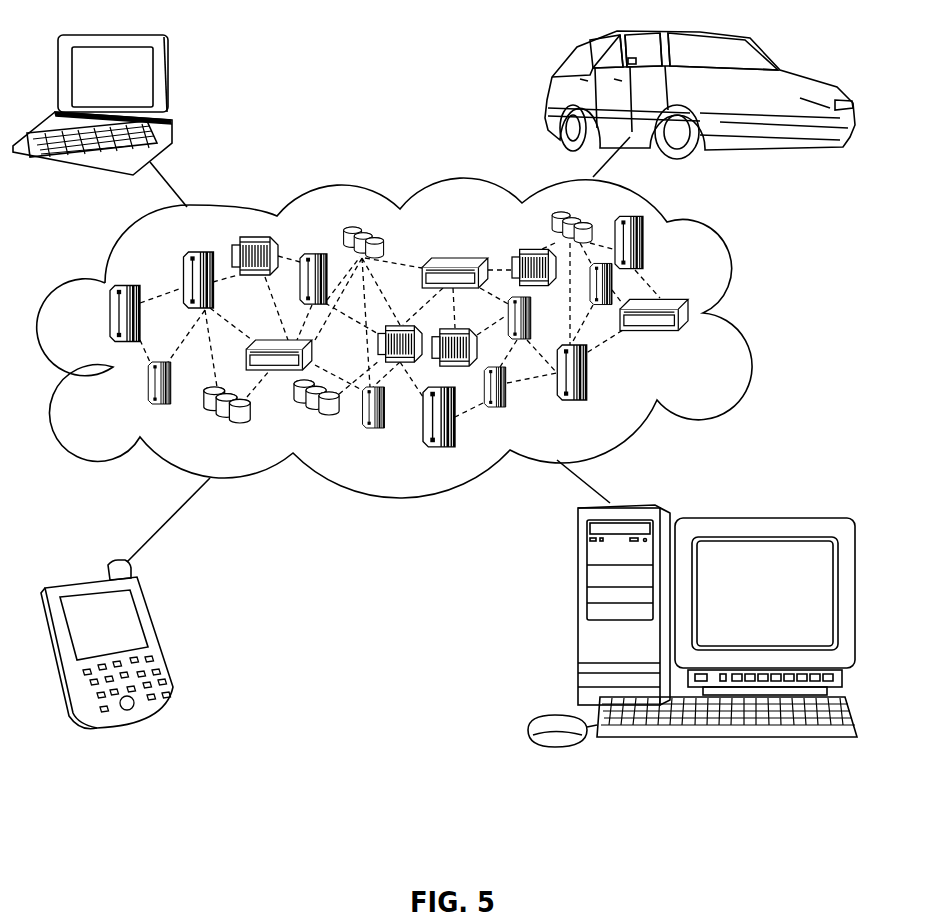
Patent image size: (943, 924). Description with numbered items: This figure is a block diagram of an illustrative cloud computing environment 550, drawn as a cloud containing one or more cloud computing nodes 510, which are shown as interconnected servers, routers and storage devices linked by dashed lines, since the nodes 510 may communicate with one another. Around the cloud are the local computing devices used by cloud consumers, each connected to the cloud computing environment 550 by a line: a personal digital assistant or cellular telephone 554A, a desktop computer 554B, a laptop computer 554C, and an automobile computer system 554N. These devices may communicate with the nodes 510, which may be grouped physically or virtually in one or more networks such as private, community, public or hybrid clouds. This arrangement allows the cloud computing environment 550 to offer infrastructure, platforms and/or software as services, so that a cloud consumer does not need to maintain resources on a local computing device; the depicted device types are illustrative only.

The cloud computing environment 550 is at (733, 277).
The cloud computing nodes 510 is at (716, 336).
The personal digital assistant (PDA) or cellular telephone 554A is at (158, 635).
The desktop computer 554B is at (576, 614).
The laptop computer 554C is at (170, 82).
The automobile computer system 554N is at (553, 88).